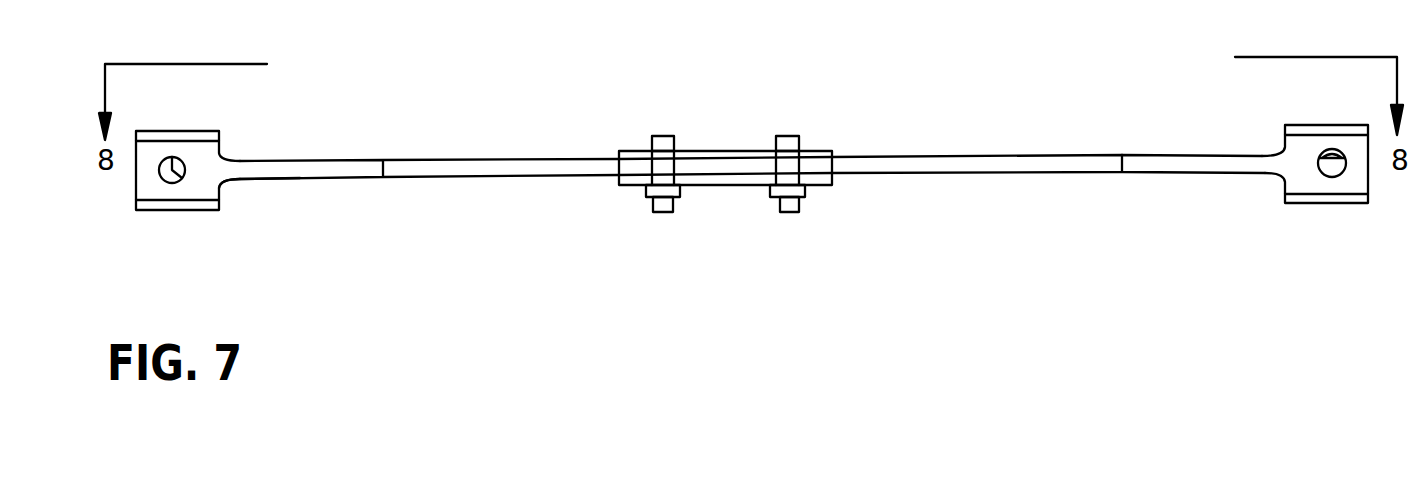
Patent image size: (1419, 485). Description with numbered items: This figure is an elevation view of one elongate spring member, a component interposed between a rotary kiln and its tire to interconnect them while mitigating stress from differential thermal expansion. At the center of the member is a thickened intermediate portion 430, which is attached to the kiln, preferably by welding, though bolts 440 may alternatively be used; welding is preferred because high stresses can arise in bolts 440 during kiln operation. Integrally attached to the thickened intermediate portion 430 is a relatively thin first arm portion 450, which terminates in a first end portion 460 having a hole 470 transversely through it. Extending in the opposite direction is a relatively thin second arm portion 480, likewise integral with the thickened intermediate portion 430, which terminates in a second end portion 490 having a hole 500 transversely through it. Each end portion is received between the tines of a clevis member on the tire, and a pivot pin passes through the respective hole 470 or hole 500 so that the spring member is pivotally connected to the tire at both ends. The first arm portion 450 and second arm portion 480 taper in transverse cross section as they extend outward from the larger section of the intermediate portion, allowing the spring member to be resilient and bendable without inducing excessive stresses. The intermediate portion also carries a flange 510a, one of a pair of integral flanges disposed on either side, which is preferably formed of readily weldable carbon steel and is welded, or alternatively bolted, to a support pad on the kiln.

The thickened intermediate portion 430 is at (719, 162).
The bolts 440 is at (663, 213).
The first arm portion 450 is at (338, 178).
The first end portion 460 is at (200, 186).
The hole 470 is at (187, 172).
The second arm portion 480 is at (993, 174).
The second end portion 490 is at (1297, 176).
The hole 500 is at (1322, 158).
The flange 510a is at (743, 186).